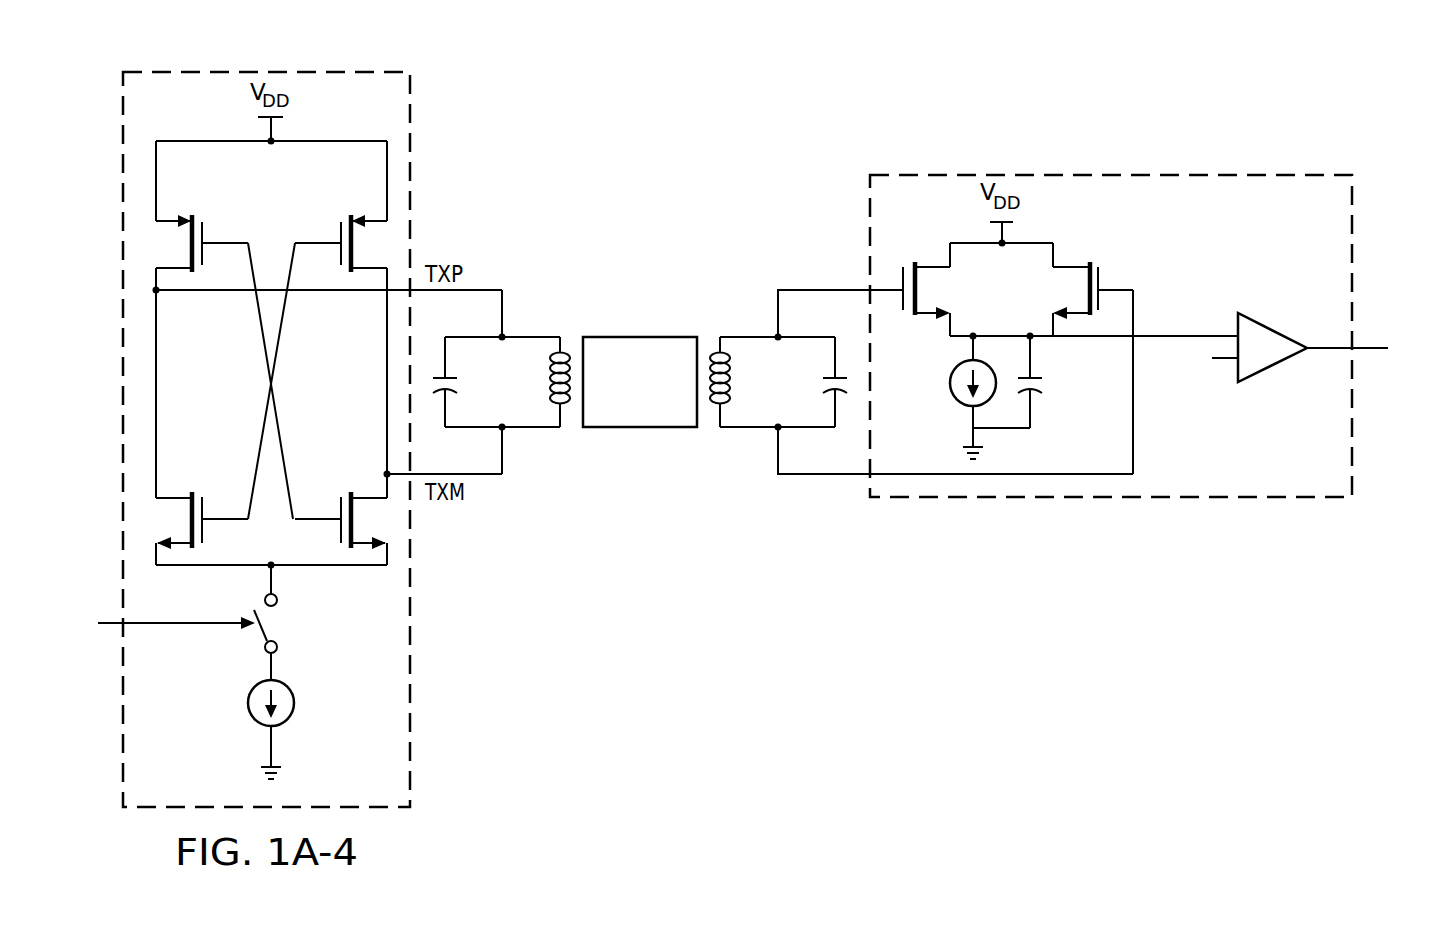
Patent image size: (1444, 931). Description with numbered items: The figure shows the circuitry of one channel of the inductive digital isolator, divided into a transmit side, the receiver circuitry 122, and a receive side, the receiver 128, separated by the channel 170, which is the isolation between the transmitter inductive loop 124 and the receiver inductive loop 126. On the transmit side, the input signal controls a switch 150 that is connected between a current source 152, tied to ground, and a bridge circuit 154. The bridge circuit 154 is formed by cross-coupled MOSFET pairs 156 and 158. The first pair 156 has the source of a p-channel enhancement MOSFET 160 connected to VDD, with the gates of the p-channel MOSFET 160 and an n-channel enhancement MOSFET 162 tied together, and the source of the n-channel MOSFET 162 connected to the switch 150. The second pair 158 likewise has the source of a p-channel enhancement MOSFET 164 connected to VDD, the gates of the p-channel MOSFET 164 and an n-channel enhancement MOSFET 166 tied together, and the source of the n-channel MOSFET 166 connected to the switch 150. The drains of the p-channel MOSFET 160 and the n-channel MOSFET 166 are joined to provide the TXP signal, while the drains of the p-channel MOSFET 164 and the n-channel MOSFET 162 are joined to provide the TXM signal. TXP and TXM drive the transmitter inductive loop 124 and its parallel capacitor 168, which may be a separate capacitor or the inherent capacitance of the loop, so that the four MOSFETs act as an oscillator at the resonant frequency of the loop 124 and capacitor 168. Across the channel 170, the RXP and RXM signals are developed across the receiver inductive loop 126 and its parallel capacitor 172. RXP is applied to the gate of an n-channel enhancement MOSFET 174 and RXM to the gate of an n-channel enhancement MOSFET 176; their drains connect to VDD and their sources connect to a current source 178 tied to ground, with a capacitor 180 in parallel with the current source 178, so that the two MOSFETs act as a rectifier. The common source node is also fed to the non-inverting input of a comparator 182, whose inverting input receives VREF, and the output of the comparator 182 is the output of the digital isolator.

The receiver circuitry 122 is at (238, 72).
The switch 150 is at (263, 626).
The current source 152 is at (248, 707).
The bridge circuit 154 is at (157, 384).
The first cross-coupled MOSFET pair 156 is at (262, 266).
The second cross-coupled MOSFET pair 158 is at (283, 325).
The p-channel enhancement MOSFET 160 is at (207, 230).
The n-channel enhancement MOSFET 162 is at (336, 508).
The p-channel enhancement MOSFET 164 is at (336, 230).
The n-channel enhancement MOSFET 166 is at (207, 508).
The transmitter inductive loop 124 is at (562, 350).
The parallel capacitor 168 is at (457, 386).
The channel 170 is at (638, 337).
The receiver inductive loop 126 is at (716, 352).
The parallel capacitor 172 is at (823, 386).
The n-channel enhancement MOSFET 174 is at (890, 278).
The n-channel enhancement MOSFET 176 is at (1101, 279).
The current source 178 is at (949, 384).
The capacitor 180 is at (1044, 386).
The comparator 182 is at (1272, 367).
The receiver 128 is at (1181, 172).